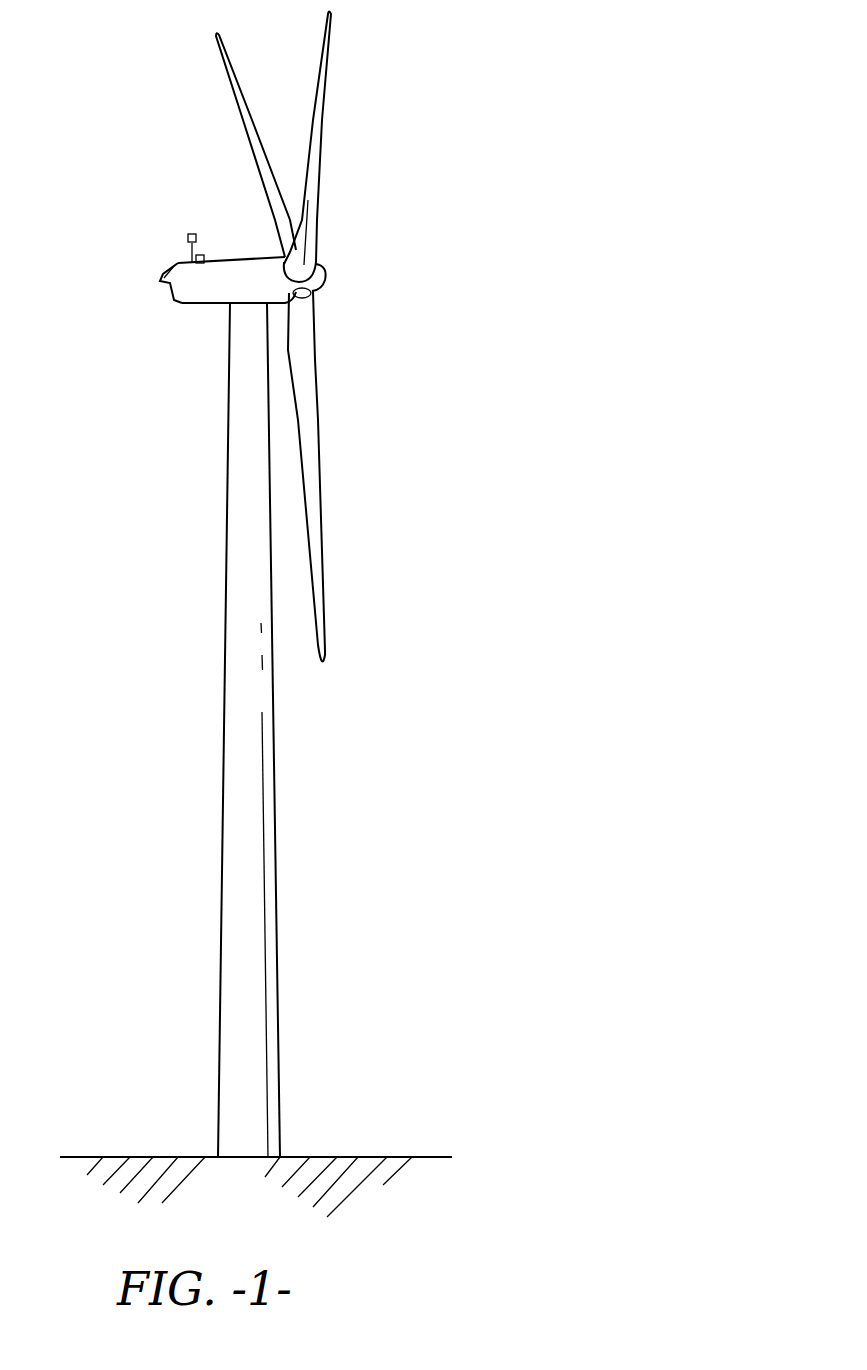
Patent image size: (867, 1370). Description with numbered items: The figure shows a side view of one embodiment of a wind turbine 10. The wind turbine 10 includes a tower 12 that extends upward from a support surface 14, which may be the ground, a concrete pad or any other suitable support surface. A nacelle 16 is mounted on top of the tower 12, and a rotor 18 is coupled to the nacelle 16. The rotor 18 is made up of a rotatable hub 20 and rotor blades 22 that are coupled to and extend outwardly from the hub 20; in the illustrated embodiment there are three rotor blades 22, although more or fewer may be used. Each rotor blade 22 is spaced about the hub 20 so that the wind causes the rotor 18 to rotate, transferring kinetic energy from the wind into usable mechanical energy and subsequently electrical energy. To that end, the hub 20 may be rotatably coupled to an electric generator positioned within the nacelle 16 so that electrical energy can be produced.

The wind turbine 10 is at (305, 615).
The tower 12 is at (235, 848).
The support surface 14 is at (145, 1157).
The nacelle 16 is at (203, 305).
The rotor 18 is at (388, 268).
The rotatable hub 20 is at (327, 281).
The rotor blade 22 is at (255, 160).